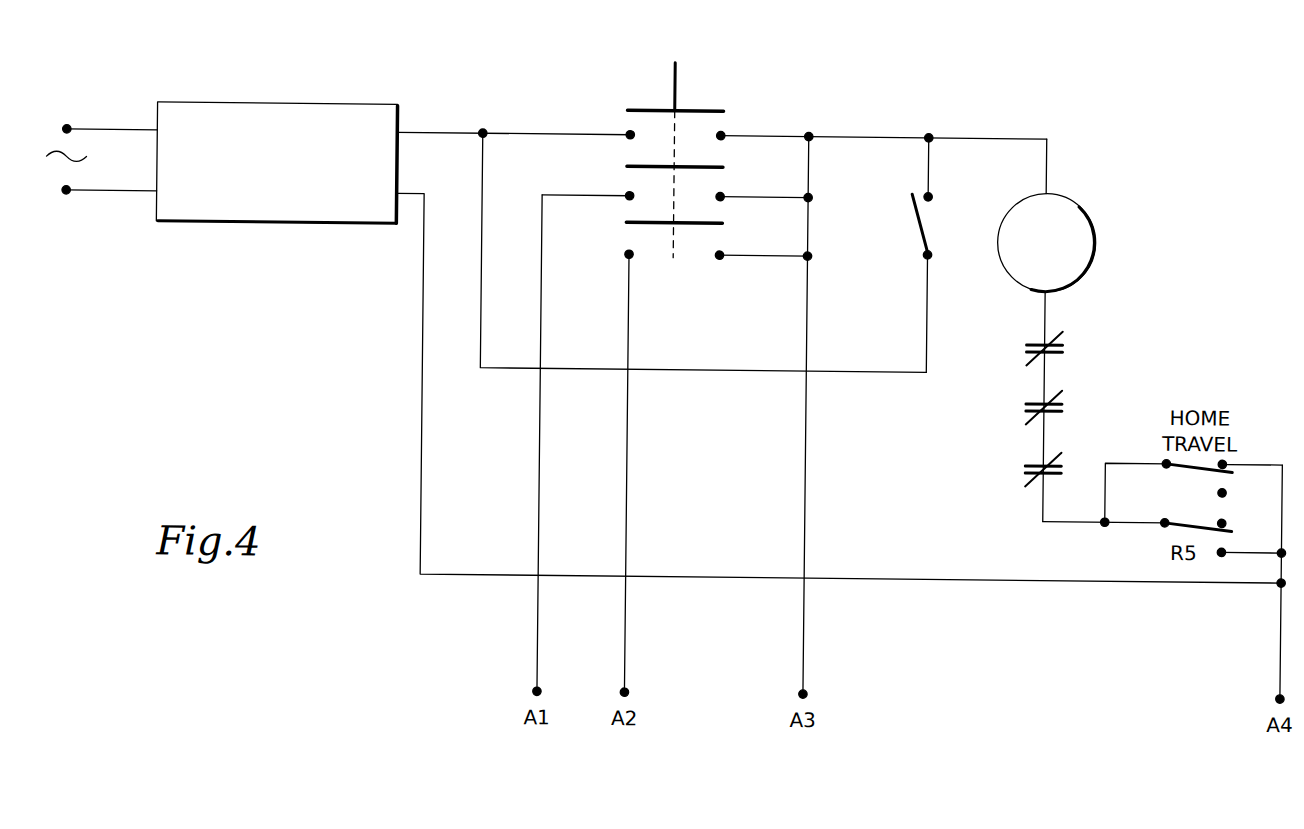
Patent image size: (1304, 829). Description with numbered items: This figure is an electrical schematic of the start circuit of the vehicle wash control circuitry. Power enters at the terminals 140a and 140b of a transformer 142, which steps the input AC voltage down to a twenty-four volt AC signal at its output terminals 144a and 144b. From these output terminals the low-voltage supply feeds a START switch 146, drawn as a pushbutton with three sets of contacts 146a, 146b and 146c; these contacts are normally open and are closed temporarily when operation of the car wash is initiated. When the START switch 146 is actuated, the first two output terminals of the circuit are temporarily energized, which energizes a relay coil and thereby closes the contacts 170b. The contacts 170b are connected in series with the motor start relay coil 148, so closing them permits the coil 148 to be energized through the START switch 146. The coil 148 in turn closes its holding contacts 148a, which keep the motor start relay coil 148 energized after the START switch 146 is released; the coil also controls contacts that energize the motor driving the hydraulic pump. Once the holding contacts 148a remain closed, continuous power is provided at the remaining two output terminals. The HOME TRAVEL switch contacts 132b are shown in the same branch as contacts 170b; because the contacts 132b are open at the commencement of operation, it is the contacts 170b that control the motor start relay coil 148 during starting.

The terminal 140a is at (110, 106).
The terminal 140b is at (67, 203).
The transformer 142 is at (277, 140).
The output terminal 144a is at (662, 225).
The output terminal 144b is at (839, 364).
The START switch 146 is at (712, 147).
The contacts 146a is at (727, 120).
The contacts 146b is at (717, 160).
The contacts 146c is at (717, 220).
The motor start relay coil 148 is at (1082, 205).
The holding contacts 148a is at (915, 225).
The HOME TRAVEL switch contacts 132b is at (1226, 478).
The contacts 170b is at (1229, 537).